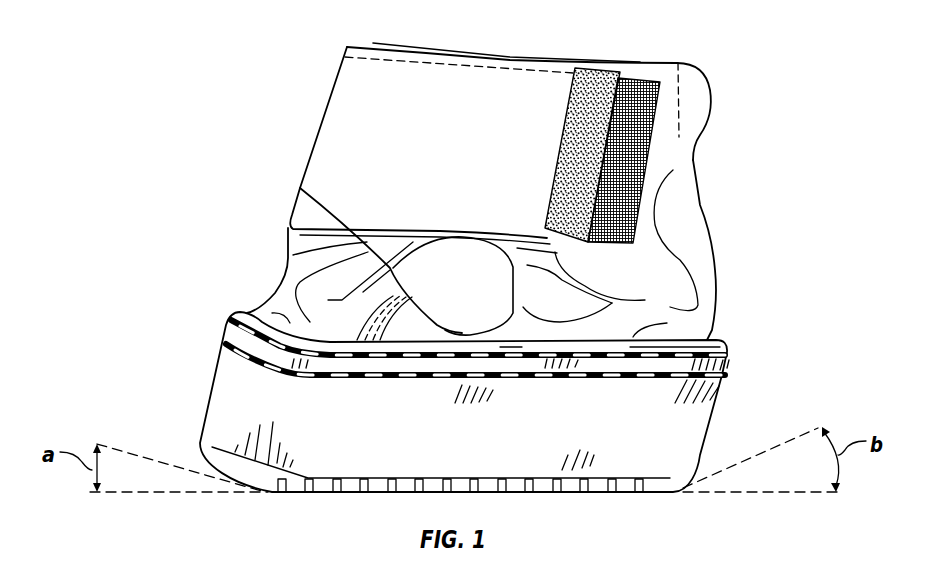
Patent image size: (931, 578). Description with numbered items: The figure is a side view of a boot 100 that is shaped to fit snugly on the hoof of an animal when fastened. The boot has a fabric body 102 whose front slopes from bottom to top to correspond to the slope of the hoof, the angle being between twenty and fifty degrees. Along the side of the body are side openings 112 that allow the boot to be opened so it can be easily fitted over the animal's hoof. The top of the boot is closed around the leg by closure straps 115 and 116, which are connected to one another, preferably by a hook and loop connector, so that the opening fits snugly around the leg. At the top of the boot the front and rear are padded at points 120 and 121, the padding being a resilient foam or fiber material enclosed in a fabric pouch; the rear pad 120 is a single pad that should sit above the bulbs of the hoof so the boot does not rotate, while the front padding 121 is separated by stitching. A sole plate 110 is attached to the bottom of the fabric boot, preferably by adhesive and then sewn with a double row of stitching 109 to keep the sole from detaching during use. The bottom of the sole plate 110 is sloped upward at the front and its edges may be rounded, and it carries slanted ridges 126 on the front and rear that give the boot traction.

The article of footwear 100 is at (176, 60).
The upper 102 is at (188, 291).
The double row of stitching 109 is at (728, 355).
The sole plate 110 is at (212, 392).
The side openings 112 is at (300, 188).
The closure strap 115 is at (337, 107).
The closure strap 116 is at (647, 130).
The rear padding 120 is at (703, 93).
The front padding 121 is at (373, 43).
The slanted ridges 126 is at (525, 482).